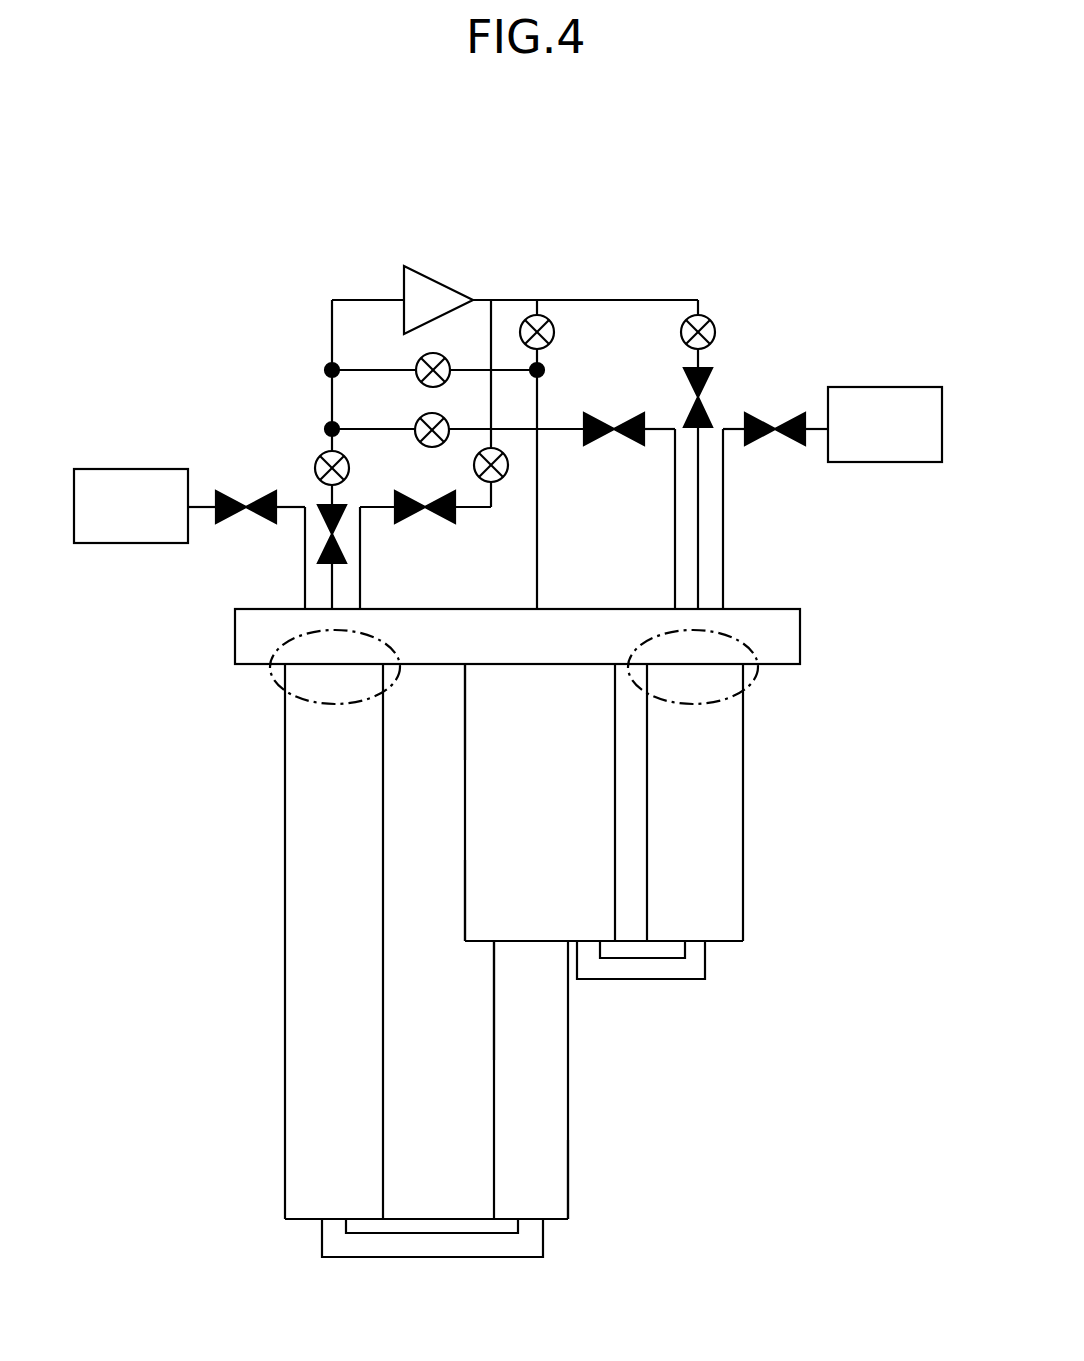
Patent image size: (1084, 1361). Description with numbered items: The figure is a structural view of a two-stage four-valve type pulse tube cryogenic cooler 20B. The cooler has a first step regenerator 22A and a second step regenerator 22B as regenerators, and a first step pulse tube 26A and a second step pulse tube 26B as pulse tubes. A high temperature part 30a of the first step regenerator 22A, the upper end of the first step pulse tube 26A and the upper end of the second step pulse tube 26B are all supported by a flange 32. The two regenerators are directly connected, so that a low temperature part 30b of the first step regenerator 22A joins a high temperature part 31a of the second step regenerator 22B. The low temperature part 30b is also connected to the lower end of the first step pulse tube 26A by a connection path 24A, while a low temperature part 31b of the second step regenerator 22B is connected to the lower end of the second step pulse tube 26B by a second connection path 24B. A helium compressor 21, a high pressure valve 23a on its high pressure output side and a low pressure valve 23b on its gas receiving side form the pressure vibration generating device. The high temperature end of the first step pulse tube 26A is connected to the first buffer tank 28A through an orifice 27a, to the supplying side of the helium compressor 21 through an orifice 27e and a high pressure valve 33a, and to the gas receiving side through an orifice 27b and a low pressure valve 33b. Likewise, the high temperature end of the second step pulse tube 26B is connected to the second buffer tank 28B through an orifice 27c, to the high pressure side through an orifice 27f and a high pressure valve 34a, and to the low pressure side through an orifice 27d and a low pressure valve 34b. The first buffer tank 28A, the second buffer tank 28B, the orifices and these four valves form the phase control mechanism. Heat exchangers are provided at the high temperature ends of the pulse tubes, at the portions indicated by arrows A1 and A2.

The two-stage four-valve type pulse tube cryogenic cooler 20B is at (784, 152).
The helium compressor 21 is at (440, 283).
The high pressure valve 23a is at (549, 321).
The low pressure valve 23b is at (419, 358).
The high pressure valve 33a is at (711, 321).
The low pressure valve 33b is at (418, 422).
The high pressure valve 34a is at (508, 467).
The low pressure valve 34b is at (318, 461).
The orifice 27a is at (780, 414).
The orifice 27b is at (614, 414).
The orifice 27c is at (230, 520).
The orifice 27d is at (325, 560).
The orifice 27e is at (712, 385).
The orifice 27f is at (450, 522).
The first buffer tank 28A is at (885, 387).
The second buffer tank 28B is at (120, 469).
The flange 32 is at (780, 609).
The arrow A1 is at (271, 672).
The arrow A2 is at (756, 683).
The first step regenerator 22A is at (465, 861).
The second step regenerator 22B is at (568, 1107).
The first step pulse tube 26A is at (743, 865).
The second step pulse tube 26B is at (287, 899).
The high temperature part 30a is at (470, 700).
The low temperature part 30b is at (475, 920).
The high temperature part 31a is at (505, 1005).
The low temperature part 31b is at (562, 1199).
The connection path 24A is at (675, 968).
The second connection path 24B is at (445, 1257).